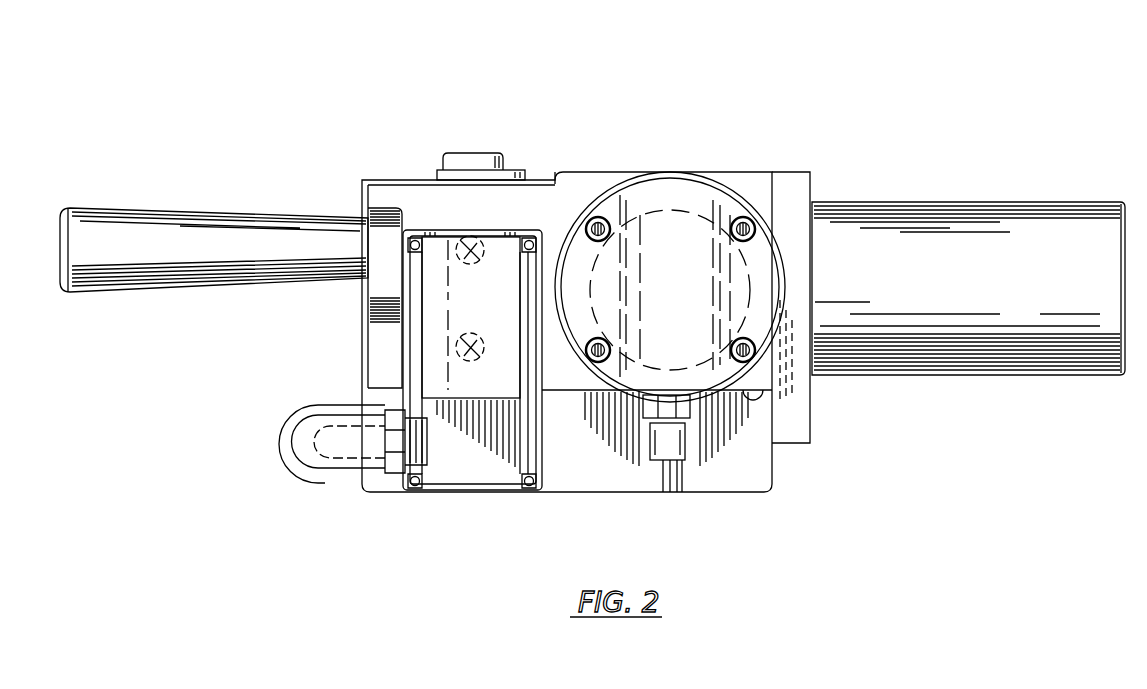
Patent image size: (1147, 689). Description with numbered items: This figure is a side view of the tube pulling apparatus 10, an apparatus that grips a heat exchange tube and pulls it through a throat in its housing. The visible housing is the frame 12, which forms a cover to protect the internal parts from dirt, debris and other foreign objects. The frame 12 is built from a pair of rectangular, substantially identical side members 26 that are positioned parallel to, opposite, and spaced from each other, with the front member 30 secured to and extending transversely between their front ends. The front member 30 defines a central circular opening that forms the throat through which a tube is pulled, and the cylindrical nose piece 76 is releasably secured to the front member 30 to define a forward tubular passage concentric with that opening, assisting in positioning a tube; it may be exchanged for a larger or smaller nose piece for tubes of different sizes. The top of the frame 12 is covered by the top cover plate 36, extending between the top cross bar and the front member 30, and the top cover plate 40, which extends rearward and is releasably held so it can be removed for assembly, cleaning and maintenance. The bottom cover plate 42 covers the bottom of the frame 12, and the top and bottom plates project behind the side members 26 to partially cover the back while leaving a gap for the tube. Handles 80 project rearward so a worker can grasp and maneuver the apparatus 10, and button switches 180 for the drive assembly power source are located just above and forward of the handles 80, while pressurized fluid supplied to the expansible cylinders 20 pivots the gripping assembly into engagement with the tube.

The tube pulling apparatus 10 is at (857, 98).
The frame 12 is at (840, 173).
The expansible cylinders 20 is at (700, 165).
The side members 26 is at (723, 484).
The front member 30 is at (806, 431).
The top cover plate 36 is at (619, 172).
The top cover plate 40 is at (395, 178).
The bottom cover plate 42 is at (362, 488).
The nose piece 76 is at (968, 288).
The handles 80 is at (231, 298).
The button switches 180 is at (477, 153).